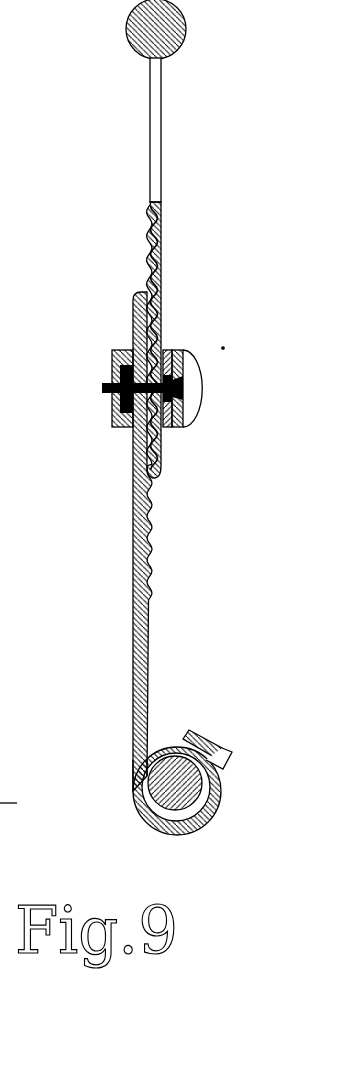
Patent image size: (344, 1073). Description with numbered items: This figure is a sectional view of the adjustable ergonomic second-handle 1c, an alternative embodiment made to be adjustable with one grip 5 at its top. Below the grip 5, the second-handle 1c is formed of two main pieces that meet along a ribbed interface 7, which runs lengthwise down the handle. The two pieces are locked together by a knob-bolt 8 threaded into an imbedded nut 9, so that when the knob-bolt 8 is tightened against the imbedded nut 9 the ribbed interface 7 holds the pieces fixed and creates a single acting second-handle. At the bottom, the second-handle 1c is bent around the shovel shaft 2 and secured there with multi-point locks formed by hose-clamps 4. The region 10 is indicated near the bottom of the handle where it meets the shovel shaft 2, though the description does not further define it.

The grip 5 is at (130, 53).
The ergonomic second-handle 1c is at (158, 155).
The ribbed interface 7 is at (152, 578).
The imbedded nut 9 is at (122, 427).
The knob-bolt 8 is at (193, 395).
The shovel shaft 2 is at (143, 818).
The junction 10 is at (133, 783).
The hose-clamps 4 is at (201, 728).